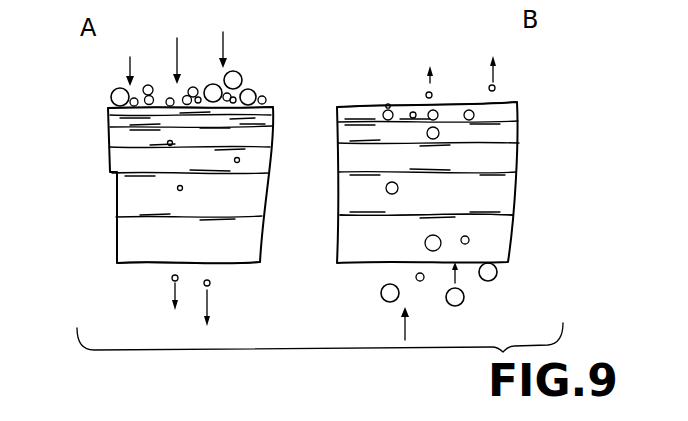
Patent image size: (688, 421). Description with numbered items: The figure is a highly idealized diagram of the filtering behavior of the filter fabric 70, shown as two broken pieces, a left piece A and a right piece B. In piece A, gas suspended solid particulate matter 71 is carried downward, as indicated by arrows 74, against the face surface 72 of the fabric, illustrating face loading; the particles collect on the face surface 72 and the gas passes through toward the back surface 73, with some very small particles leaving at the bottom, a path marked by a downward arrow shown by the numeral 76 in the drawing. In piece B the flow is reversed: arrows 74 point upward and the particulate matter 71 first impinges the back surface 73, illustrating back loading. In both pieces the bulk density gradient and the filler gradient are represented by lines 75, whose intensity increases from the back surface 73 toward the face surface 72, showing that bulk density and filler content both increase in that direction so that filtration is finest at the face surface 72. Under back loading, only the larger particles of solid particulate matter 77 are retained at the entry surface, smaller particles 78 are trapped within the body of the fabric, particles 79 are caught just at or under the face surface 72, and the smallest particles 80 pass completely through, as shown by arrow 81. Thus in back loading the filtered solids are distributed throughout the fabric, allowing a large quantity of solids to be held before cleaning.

The filter fabric 70 is at (66, 131).
The gas suspended solid particulate matter 71 is at (150, 85).
The face surface 72 is at (270, 107).
The back surface 73 is at (257, 263).
The arrows 74 is at (226, 42).
The lines 75 is at (118, 166).
The particles passing through body 76 is at (209, 305).
The larger particles of solid particulate matter 77 is at (386, 302).
The smaller particles 78 is at (426, 199).
The particles 79 is at (388, 104).
The smaller particles 80 is at (428, 92).
The arrow 81 is at (433, 69).